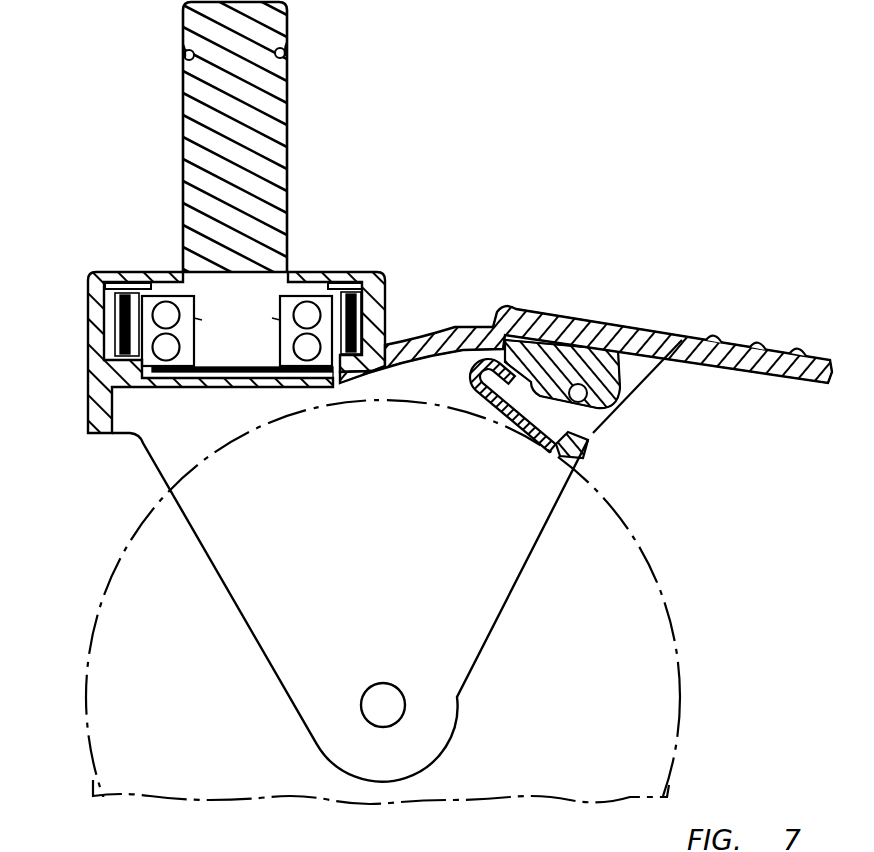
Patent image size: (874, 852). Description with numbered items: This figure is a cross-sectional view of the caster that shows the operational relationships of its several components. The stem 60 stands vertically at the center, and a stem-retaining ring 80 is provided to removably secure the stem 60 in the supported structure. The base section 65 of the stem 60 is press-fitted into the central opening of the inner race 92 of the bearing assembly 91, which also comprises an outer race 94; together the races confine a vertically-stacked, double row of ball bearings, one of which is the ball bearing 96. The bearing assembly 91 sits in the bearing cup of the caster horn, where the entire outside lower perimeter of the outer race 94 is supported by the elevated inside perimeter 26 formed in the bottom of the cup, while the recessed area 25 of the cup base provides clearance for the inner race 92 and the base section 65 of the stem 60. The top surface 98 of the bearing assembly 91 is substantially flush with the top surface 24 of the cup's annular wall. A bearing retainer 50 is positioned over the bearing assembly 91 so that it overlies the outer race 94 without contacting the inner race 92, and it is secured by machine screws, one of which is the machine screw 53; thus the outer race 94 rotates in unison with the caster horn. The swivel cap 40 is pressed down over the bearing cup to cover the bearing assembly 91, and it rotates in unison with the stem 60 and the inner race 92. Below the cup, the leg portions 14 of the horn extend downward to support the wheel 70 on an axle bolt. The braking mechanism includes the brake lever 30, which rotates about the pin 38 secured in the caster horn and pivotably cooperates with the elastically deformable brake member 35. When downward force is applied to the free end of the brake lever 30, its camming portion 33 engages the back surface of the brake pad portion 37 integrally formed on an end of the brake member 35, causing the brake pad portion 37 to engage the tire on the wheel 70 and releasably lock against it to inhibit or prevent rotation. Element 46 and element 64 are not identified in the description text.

The leg portions 14 is at (372, 551).
The top surface 24 is at (106, 298).
The recessed area 25 is at (232, 376).
The inside perimeter 26 is at (105, 375).
The brake lever 30 is at (625, 330).
The camming portion 33 is at (592, 426).
The brake member 35 is at (508, 410).
The brake pad portion 37 is at (592, 452).
The pin 38 is at (600, 388).
The swivel cap 40 is at (365, 270).
The right bearing 46 is at (296, 283).
The bearing retainer 50 is at (343, 282).
The machine screw 53 is at (365, 297).
The stem 60 is at (198, 130).
The ground line 64 is at (381, 816).
The base section 65 is at (206, 373).
The wheel 70 is at (126, 655).
The stem-retaining ring 80 is at (283, 50).
The bearing assembly 91 is at (280, 340).
The inner race 92 is at (278, 318).
The outer race 94 is at (140, 333).
The ball bearing 96 is at (170, 300).
The top surface 98 is at (152, 292).